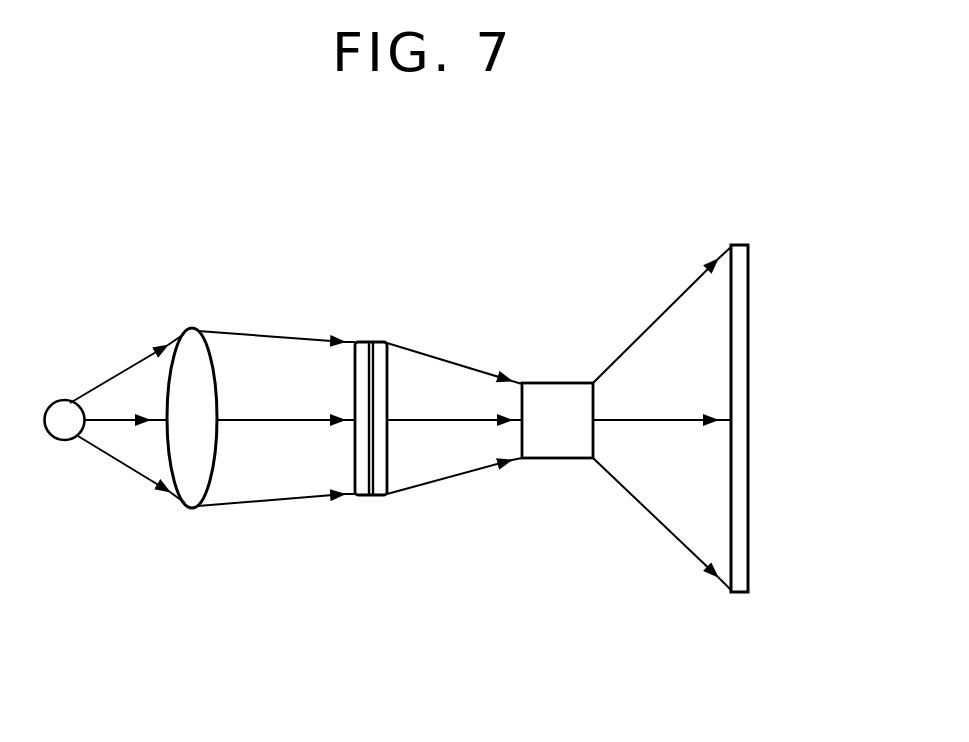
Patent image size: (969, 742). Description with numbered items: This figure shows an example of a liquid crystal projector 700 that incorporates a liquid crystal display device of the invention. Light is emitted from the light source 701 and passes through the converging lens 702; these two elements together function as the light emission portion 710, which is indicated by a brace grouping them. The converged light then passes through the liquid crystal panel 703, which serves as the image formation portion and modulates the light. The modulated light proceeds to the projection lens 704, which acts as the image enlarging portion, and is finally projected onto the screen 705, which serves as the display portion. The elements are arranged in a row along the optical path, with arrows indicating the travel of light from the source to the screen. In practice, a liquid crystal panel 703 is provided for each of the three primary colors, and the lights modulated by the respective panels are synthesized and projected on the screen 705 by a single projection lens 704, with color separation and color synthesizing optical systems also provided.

The liquid crystal projector 700 is at (569, 214).
The light source 701 is at (66, 432).
The converging lens 702 is at (192, 488).
The liquid crystal panel 703 is at (373, 496).
The projection lens 704 is at (566, 447).
The screen 705 is at (740, 572).
The light emission portion 710 is at (267, 637).